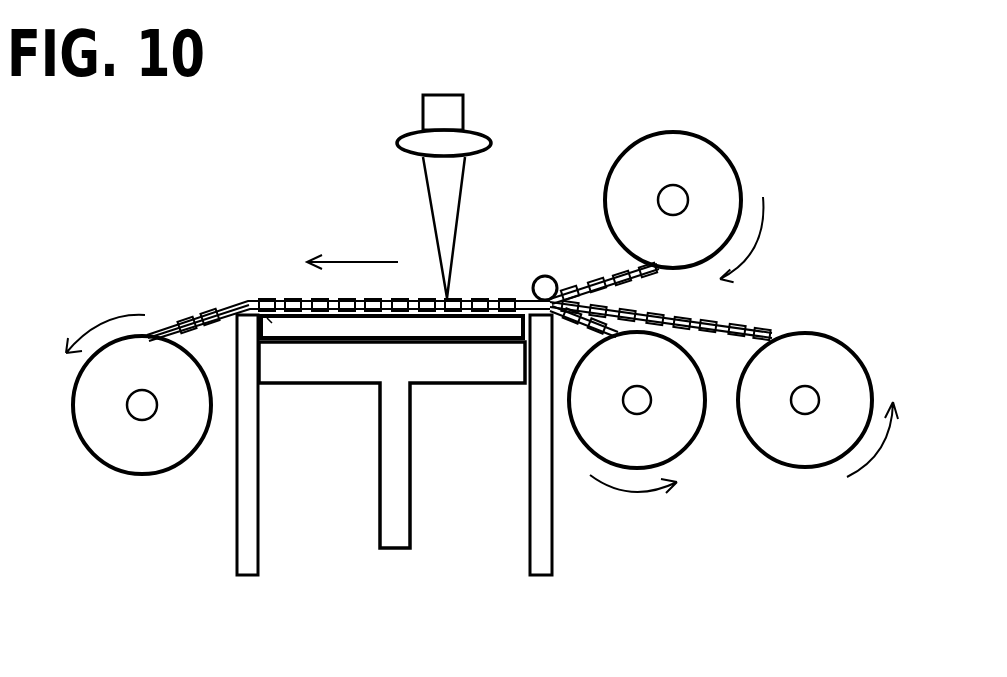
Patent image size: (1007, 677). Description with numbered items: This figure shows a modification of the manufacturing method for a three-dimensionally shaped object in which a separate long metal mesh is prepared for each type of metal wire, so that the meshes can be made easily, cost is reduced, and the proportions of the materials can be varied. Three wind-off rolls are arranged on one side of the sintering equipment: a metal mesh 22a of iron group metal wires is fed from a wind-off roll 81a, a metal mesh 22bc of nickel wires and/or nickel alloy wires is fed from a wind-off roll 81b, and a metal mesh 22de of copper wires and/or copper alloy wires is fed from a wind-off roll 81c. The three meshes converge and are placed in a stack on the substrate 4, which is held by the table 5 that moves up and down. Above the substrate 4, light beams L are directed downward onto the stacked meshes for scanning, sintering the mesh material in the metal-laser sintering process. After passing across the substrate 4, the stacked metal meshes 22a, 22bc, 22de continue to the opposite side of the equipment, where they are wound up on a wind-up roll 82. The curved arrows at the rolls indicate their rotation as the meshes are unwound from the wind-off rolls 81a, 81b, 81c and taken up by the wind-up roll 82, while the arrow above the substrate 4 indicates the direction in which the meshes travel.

The light beams L is at (443, 232).
The substrate 4 is at (248, 300).
The table 5 is at (283, 373).
The metal mesh of iron group metal wires 22a is at (585, 287).
The metal mesh of nickel wires and/or nickel alloy wires 22bc is at (733, 323).
The metal mesh of copper wires and/or copper alloy wires 22de is at (584, 318).
The wind-off roll 81a is at (705, 156).
The wind-off roll 81b is at (778, 455).
The wind-off roll 81c is at (678, 445).
The wind-up roll 82 is at (107, 457).